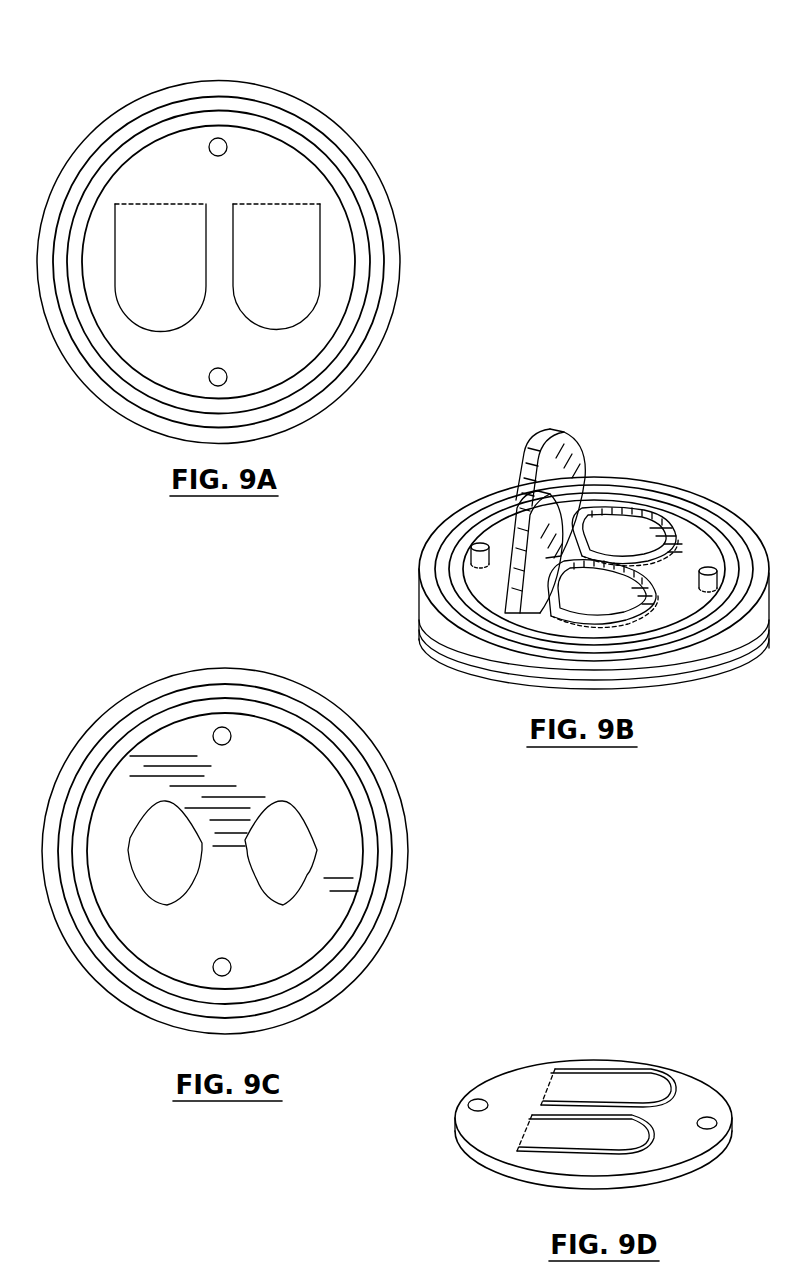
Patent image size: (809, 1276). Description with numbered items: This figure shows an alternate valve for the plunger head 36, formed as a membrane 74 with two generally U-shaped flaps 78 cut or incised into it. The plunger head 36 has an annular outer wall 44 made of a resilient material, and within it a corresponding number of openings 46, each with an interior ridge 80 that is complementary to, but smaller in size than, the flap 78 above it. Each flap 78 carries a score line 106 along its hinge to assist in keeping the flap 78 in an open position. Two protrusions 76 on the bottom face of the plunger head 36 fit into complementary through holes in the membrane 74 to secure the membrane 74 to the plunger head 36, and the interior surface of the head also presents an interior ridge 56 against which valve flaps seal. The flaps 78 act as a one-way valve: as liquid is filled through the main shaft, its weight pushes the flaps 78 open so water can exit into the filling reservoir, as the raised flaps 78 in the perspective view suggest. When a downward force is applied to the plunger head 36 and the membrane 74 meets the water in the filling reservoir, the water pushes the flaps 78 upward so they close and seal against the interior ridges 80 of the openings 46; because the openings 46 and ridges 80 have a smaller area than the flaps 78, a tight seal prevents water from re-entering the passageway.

In FIG. 9A, the plunger head 36 is at (232, 53).
In FIG. 9B, the plunger head 36 is at (668, 381).
In FIG. 9C, the plunger head 36 is at (185, 657).
In FIG. 9A, the annular outer wall 44 is at (391, 234).
In FIG. 9C, the annular outer wall 44 is at (397, 899).
In FIG. 9B, the opening 46 is at (596, 536).
In FIG. 9C, the opening 46 is at (290, 838).
In FIG. 9B, the interior ridge 56 is at (442, 547).
In FIG. 9C, the interior ridge 56 is at (104, 754).
In FIG. 9A, the membrane 74 is at (324, 216).
In FIG. 9D, the membrane 74 is at (694, 1099).
In FIG. 9A, the protrusion 76 is at (219, 140).
In FIG. 9B, the protrusion 76 is at (468, 537).
In FIG. 9C, the protrusion 76 is at (223, 730).
In FIG. 9D, the protrusion 76 is at (592, 1114).
In FIG. 9A, the flap 78 is at (290, 283).
In FIG. 9B, the flap 78 is at (502, 482).
In FIG. 9D, the flap 78 is at (595, 1127).
In FIG. 9B, the interior ridge 80 is at (619, 524).
In FIG. 9C, the interior ridge 80 is at (265, 869).
In FIG. 9A, the score line 106 is at (155, 194).
In FIG. 9D, the score line 106 is at (535, 1076).